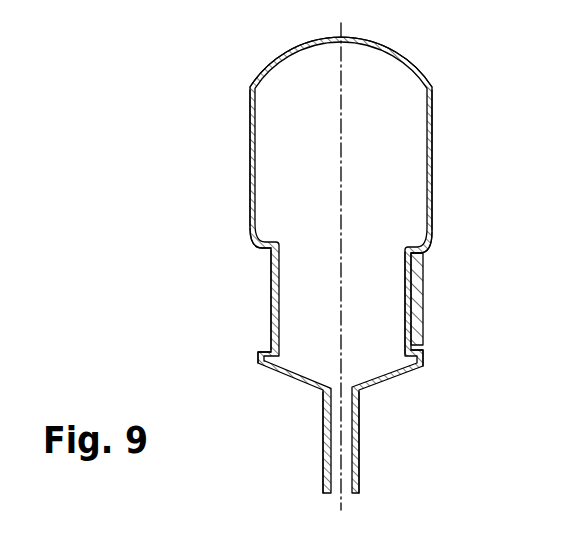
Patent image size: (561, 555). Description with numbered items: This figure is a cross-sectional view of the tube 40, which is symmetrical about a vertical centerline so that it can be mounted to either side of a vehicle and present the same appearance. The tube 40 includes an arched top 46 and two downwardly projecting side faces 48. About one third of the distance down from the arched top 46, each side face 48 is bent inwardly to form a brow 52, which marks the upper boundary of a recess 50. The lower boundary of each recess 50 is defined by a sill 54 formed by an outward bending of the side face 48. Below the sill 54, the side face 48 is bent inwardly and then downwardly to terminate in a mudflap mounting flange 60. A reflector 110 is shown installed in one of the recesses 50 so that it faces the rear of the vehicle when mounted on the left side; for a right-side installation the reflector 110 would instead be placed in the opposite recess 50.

The tube 40 is at (233, 66).
The arched top 46 is at (400, 55).
The side faces 48 is at (249, 138).
The brow 52 is at (257, 249).
The reflector 110 is at (423, 295).
The sill 54 is at (258, 352).
The recess 50 is at (280, 333).
The mudflap mounting flange 60 is at (323, 418).